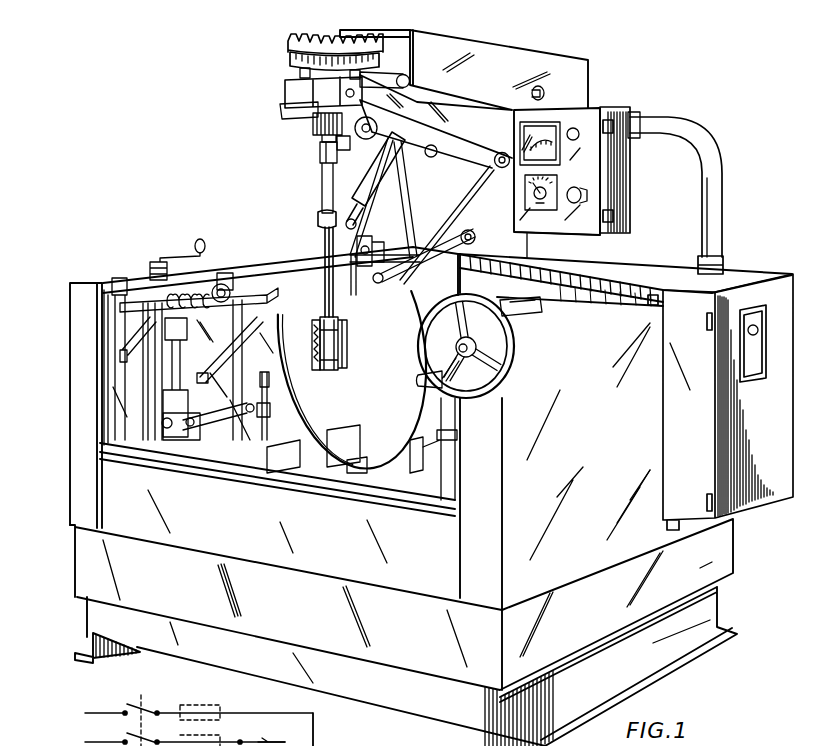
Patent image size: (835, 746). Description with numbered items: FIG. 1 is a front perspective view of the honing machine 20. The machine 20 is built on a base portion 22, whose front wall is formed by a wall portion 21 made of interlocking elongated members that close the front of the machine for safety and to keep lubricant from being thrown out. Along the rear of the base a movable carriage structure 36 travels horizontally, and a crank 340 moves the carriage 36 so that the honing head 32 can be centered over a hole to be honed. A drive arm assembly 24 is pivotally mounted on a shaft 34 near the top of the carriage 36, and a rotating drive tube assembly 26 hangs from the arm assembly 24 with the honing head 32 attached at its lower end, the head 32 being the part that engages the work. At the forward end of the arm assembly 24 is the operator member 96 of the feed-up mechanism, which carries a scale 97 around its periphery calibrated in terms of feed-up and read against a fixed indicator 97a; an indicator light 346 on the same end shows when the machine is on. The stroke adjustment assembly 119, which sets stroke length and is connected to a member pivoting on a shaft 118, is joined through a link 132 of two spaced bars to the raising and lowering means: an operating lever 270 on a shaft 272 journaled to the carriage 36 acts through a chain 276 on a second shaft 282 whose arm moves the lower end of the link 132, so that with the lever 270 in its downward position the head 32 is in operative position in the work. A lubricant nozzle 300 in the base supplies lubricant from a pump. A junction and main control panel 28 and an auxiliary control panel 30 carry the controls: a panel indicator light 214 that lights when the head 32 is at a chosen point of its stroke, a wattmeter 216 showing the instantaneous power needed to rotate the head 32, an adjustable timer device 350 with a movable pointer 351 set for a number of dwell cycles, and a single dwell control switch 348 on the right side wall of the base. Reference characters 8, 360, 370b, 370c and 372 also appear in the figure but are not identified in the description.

The direction arrow 8 is at (322, 259).
The honing machine 20 is at (63, 499).
The front wall portion 21 is at (323, 494).
The base portion 22 is at (70, 378).
The drive arm assembly 24 is at (469, 28).
The rotating drive tube assembly 26 is at (306, 211).
The junction and main control panel 28 is at (768, 498).
The auxiliary control panel 30 is at (638, 209).
The honing head 32 is at (333, 374).
The shaft 34 is at (506, 153).
The movable carriage structure 36 is at (535, 253).
The operator member 96 is at (290, 49).
The scale 97 is at (290, 63).
The fixed indicator 97a is at (281, 107).
The shaft 118 is at (432, 145).
The stroke adjustment assembly 119 is at (355, 177).
The link 132 is at (404, 189).
The panel indicator light 214 is at (578, 130).
The wattmeter 216 is at (545, 122).
The operating lever 270 is at (463, 286).
The shaft 272 is at (468, 233).
The chain 276 is at (366, 238).
The shaft 282 is at (398, 228).
The lubricant nozzle 300 is at (372, 318).
The crank 340 is at (510, 378).
The indicator light 346 is at (355, 90).
The single dwell control switch 348 is at (534, 305).
The adjustable timer device 350 is at (555, 182).
The movable pointer 351 is at (547, 200).
The power circuit 360 is at (156, 718).
The contact 370b is at (285, 729).
The contact 370c is at (343, 729).
The push button 372 is at (583, 190).